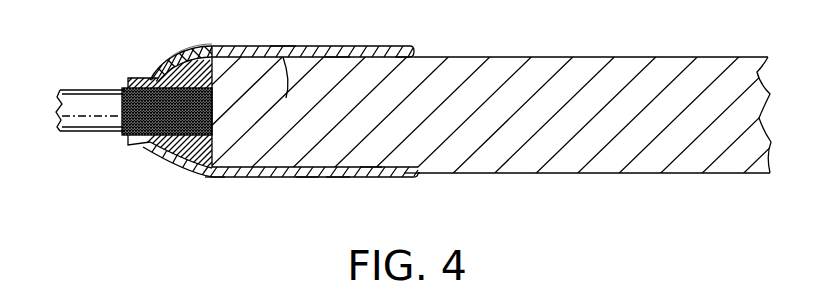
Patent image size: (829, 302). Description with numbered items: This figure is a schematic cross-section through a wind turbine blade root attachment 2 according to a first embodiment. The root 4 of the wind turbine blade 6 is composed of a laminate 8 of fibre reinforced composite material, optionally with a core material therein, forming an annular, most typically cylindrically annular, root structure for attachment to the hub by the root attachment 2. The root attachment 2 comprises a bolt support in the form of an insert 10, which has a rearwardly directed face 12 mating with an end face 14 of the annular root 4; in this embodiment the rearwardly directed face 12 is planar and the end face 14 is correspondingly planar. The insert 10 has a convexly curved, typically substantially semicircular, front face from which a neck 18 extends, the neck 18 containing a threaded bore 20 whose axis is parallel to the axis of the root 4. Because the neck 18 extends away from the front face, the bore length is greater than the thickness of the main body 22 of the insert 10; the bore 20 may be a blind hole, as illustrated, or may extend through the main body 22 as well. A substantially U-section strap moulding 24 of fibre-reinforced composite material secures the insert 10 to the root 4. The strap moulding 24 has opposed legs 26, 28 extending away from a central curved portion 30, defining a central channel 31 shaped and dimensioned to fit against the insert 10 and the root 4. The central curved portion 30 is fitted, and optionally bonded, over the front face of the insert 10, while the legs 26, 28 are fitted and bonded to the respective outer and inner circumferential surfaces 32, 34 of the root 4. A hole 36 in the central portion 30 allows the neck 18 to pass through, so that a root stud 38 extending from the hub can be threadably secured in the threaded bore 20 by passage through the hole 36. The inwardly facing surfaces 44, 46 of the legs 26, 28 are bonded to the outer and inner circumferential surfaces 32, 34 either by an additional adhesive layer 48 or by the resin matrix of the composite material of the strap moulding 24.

The wind turbine blade root attachment 2 is at (365, 46).
The root 4 is at (621, 56).
The wind turbine blade 6 is at (759, 89).
The laminate 8 is at (611, 173).
The insert 10 is at (130, 78).
The rearwardly directed face 12 is at (217, 177).
The end face 14 is at (209, 46).
The neck 18 is at (150, 148).
The threaded bore 20 is at (133, 148).
The main body 22 is at (169, 65).
The strap moulding 24 is at (265, 178).
The leg 26 is at (283, 57).
The leg 28 is at (309, 177).
The central curved portion 30 is at (166, 62).
The central channel 31 is at (365, 156).
The outer circumferential surface 32 is at (408, 58).
The inner circumferential surface 34 is at (411, 170).
The hole 36 is at (150, 80).
The root stud 38 is at (62, 104).
The inwardly facing surface 44 is at (341, 55).
The inwardly facing surface 46 is at (339, 177).
The adhesive layer 48 is at (284, 167).